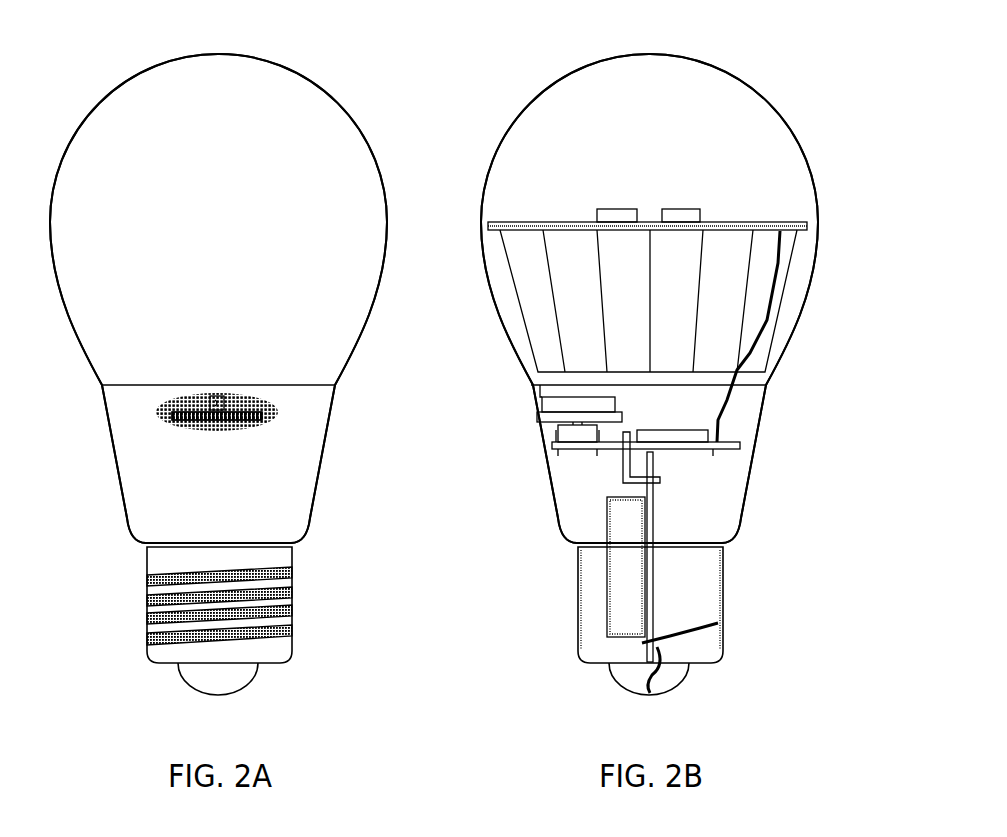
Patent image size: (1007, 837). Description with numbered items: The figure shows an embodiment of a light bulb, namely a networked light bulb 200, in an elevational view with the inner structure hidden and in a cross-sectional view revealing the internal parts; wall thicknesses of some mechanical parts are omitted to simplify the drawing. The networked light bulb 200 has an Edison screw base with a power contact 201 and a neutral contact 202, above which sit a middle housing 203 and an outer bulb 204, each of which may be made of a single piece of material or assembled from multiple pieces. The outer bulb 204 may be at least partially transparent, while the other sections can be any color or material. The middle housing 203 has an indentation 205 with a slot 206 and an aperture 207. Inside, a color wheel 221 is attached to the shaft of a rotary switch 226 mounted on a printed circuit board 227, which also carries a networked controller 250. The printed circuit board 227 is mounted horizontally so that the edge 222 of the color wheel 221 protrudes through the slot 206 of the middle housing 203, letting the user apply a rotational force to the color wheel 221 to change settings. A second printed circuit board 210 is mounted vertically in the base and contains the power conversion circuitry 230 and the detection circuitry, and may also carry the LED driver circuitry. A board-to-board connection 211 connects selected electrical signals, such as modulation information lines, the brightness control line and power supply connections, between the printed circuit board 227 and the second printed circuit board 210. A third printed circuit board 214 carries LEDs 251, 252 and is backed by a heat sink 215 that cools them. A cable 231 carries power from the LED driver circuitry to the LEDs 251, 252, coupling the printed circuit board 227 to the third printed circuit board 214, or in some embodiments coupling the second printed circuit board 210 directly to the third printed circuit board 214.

In FIG. 2A, the networked light bulb 200 is at (332, 73).
In FIG. 2B, the networked light bulb 200 is at (492, 85).
In FIG. 2A, the power contact 201 is at (228, 693).
In FIG. 2B, the power contact 201 is at (430, 735).
In FIG. 2A, the neutral contact 202 is at (292, 648).
In FIG. 2B, the neutral contact 202 is at (425, 683).
In FIG. 2A, the middle housing 203 is at (307, 520).
In FIG. 2B, the middle housing 203 is at (425, 542).
In FIG. 2A, the outer bulb 204 is at (365, 139).
In FIG. 2B, the outer bulb 204 is at (500, 139).
In FIG. 2A, the indentation 205 is at (292, 402).
In FIG. 2B, the indentation 205 is at (533, 402).
In FIG. 2A, the slot 206 is at (165, 422).
In FIG. 2A, the aperture 207 is at (213, 405).
In FIG. 2B, the second printed circuit board 210 is at (653, 518).
In FIG. 2B, the board-to-board connection 211 is at (663, 480).
In FIG. 2B, the third printed circuit board 214 is at (762, 222).
In FIG. 2B, the heat sink 215 is at (513, 283).
In FIG. 2B, the color wheel 221 is at (622, 403).
In FIG. 2A, the edge 222 is at (263, 417).
In FIG. 2B, the edge 222 is at (535, 415).
In FIG. 2B, the rotary switch 226 is at (557, 433).
In FIG. 2B, the printed circuit board 227 is at (740, 445).
In FIG. 2B, the power conversion circuitry 230 is at (607, 608).
In FIG. 2B, the cable 231 is at (765, 330).
In FIG. 2B, the networked controller 250 is at (708, 430).
In FIG. 2B, the LED 251 is at (605, 209).
In FIG. 2B, the LED 252 is at (673, 209).